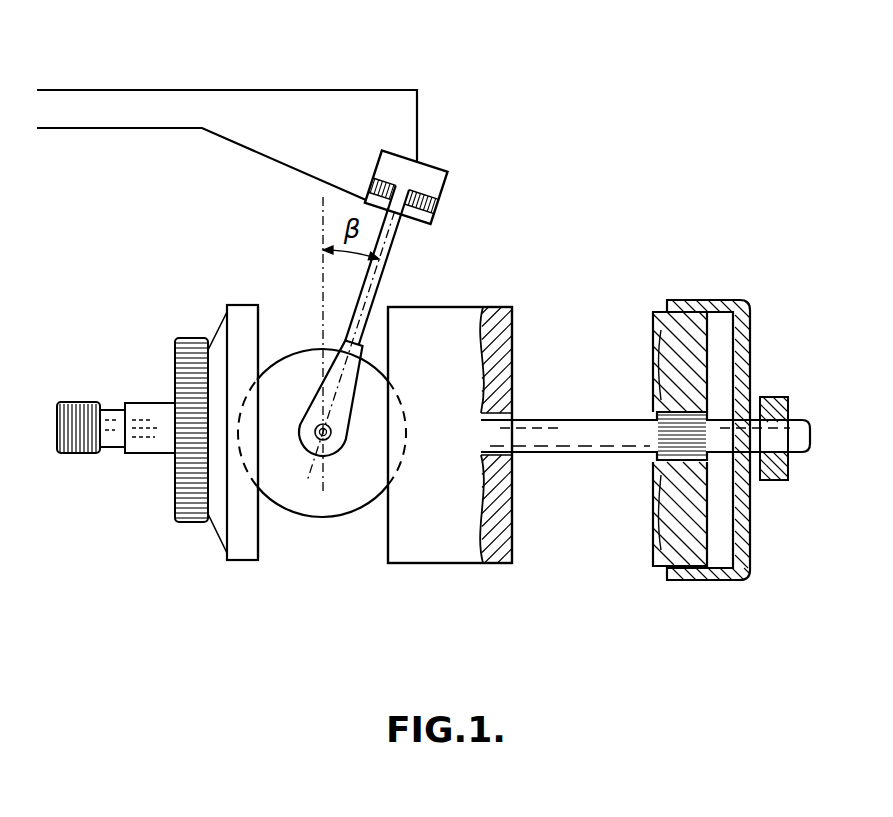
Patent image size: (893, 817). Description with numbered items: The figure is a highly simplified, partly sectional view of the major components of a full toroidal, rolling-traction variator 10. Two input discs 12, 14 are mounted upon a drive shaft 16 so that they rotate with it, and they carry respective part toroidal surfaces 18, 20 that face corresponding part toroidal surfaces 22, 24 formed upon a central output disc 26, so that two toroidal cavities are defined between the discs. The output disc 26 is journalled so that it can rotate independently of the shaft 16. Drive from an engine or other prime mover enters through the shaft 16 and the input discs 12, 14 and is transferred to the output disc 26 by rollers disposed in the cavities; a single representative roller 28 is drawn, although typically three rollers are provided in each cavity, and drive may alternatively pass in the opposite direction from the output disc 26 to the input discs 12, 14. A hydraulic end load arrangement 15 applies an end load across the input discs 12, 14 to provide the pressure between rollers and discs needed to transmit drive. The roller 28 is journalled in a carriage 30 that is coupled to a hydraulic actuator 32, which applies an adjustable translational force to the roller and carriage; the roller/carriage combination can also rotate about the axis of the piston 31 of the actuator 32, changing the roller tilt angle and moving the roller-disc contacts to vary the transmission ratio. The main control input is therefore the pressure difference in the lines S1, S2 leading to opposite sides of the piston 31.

The variator 10 is at (387, 600).
The input disc 12 is at (242, 320).
The input disc 14 is at (653, 567).
The hydraulic end load arrangement 15 is at (753, 537).
The drive shaft 16 is at (150, 443).
The part toroidal surface 18 is at (263, 340).
The part toroidal surface 20 is at (663, 360).
The part toroidal surface 22 is at (385, 523).
The part toroidal surface 24 is at (500, 513).
The central output disc 26 is at (442, 347).
The roller 28 is at (283, 510).
The carriage 30 is at (340, 382).
The piston 31 is at (413, 182).
The hydraulic actuator 32 is at (433, 218).
The hydraulic line S1 is at (150, 90).
The hydraulic line S2 is at (148, 128).